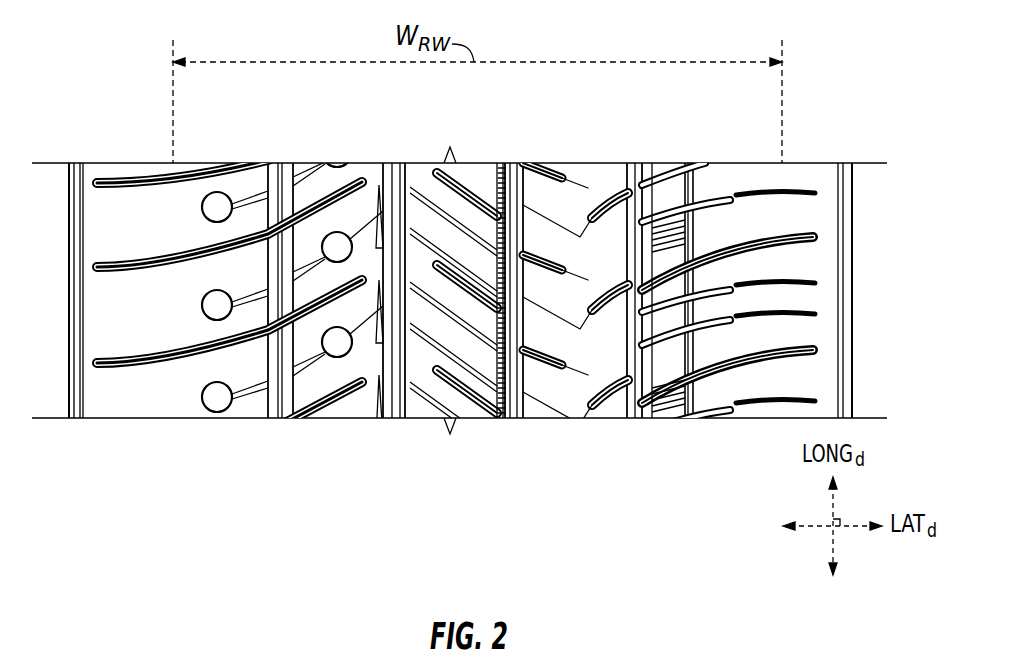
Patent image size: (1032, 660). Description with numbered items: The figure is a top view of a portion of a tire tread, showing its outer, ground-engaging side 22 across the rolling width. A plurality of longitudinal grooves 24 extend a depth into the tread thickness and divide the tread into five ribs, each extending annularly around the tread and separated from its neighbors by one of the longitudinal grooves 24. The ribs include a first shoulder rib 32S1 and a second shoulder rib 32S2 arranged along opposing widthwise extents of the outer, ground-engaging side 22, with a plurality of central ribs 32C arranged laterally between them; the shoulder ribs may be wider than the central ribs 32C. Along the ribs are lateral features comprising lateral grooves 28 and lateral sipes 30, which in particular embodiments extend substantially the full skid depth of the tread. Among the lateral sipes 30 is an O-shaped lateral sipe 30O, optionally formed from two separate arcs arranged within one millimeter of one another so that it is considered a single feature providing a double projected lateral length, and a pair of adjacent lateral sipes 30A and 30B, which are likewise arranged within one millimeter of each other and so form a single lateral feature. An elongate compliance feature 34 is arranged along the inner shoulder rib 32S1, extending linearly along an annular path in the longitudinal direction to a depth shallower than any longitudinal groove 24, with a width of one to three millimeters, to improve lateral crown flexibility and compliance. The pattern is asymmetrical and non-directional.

The outer, ground-engaging side 22 is at (187, 203).
The longitudinal grooves 24 is at (278, 163).
The lateral grooves 28 is at (333, 193).
The lateral sipes 30 is at (247, 397).
The "0" lateral sipe 30O is at (203, 403).
The lateral sipe 30A is at (725, 197).
The lateral sipe 30B is at (802, 187).
The second shoulder rib 32S2 is at (175, 500).
The central ribs 32C is at (313, 500).
The first shoulder rib 32S1 is at (677, 500).
The elongate compliance feature 34 is at (690, 163).